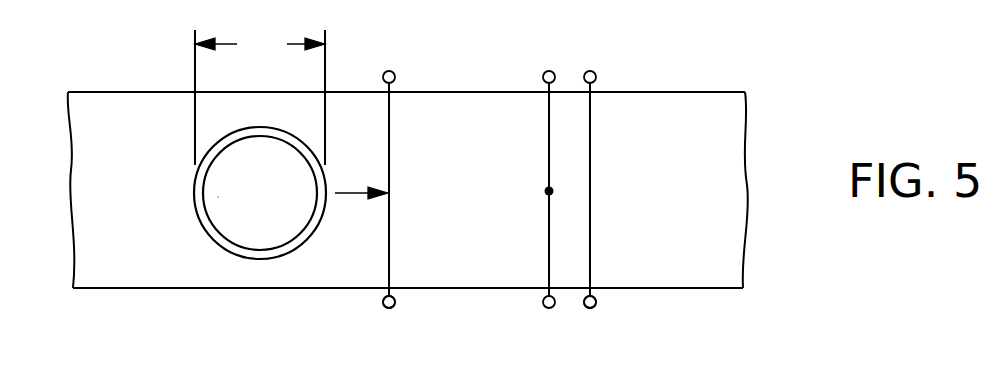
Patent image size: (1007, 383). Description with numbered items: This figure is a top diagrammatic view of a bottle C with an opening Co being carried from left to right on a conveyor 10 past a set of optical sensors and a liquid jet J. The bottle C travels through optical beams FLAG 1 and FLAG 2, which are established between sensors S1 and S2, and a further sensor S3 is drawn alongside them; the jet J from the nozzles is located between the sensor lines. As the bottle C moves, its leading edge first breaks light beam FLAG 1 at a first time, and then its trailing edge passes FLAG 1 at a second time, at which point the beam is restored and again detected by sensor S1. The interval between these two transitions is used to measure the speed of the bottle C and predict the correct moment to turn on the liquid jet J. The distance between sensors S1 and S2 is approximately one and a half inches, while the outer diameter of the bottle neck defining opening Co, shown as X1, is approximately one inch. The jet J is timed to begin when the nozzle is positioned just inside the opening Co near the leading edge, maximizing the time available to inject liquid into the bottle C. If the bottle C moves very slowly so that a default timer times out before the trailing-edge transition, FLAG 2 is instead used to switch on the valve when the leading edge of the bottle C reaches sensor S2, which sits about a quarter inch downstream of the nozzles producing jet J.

The conveyor 10 is at (703, 108).
The bottle C is at (242, 128).
The bottle opening Co is at (218, 197).
The outer diameter of the bottle neck X1 is at (260, 96).
The sensor S1 is at (389, 70).
The sensor S2 is at (590, 70).
The third sensor line S3 is at (549, 70).
The jet J is at (549, 191).
The light beam FLAG 1 is at (389, 262).
The light beam FLAG 2 is at (591, 260).